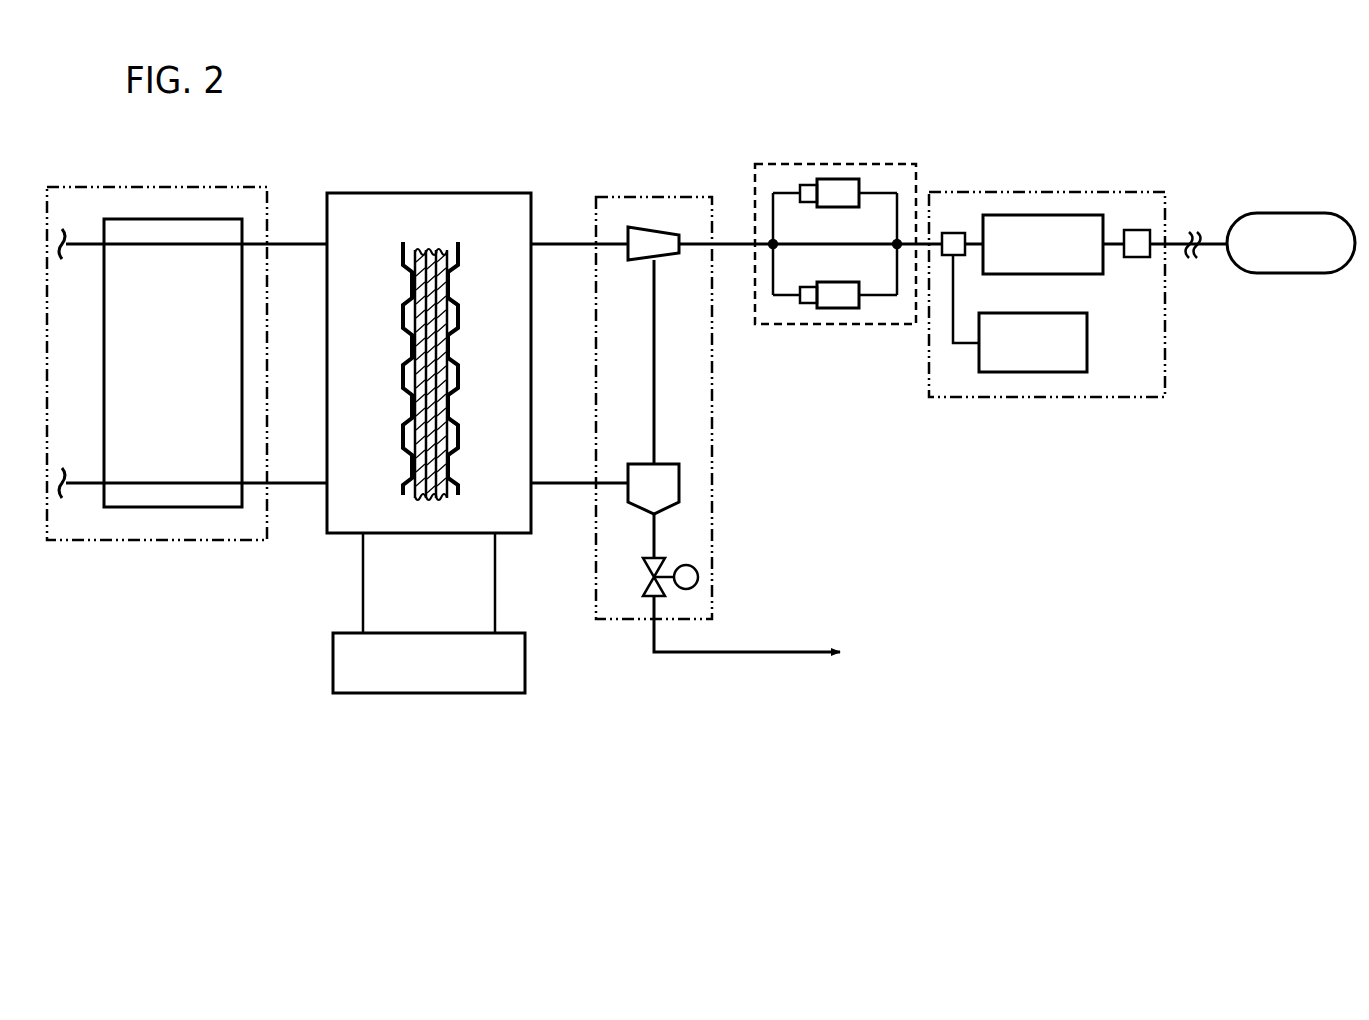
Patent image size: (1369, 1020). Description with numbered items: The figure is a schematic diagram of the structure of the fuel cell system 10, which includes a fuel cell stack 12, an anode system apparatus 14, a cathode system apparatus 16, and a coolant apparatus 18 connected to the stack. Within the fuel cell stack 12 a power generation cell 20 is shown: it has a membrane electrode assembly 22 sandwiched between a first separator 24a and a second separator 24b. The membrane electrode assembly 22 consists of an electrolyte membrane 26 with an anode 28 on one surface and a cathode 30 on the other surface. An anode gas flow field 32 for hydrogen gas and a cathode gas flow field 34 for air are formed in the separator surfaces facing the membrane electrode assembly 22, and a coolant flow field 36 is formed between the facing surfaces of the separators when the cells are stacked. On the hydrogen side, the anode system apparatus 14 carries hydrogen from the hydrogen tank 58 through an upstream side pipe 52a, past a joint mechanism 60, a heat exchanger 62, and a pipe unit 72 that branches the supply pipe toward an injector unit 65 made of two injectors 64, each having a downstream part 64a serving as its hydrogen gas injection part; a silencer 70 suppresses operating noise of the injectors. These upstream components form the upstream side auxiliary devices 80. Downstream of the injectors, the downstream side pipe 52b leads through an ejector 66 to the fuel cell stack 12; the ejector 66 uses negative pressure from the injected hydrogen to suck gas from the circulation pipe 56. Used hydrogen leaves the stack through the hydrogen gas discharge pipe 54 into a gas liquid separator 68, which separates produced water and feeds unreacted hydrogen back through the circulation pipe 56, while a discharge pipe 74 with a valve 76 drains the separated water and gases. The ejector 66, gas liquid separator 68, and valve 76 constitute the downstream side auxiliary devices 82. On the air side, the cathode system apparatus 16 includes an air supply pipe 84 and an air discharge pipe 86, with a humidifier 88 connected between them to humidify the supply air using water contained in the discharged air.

The fuel cell system 10 is at (543, 95).
The fuel cell stack 12 is at (420, 193).
The anode system apparatus 14 is at (1007, 91).
The cathode system apparatus 16 is at (197, 185).
The coolant apparatus 18 is at (333, 657).
The power generation cell 20 is at (429, 430).
The membrane electrode assembly 22 is at (427, 433).
The first separator 24a is at (458, 312).
The second separator 24b is at (403, 312).
The electrolyte membrane 26 is at (431, 500).
The anode 28 is at (455, 414).
The cathode 30 is at (413, 500).
The anode gas flow field 32 is at (458, 375).
The cathode gas flow field 34 is at (403, 375).
The coolant flow field 36 is at (456, 398).
The upstream side pipe 52a is at (1110, 245).
The downstream side pipe 52b is at (736, 243).
The hydrogen gas discharge pipe 54 is at (572, 484).
The circulation pipe 56 is at (653, 343).
The hydrogen tank 58 is at (1255, 213).
The joint mechanism 60 is at (1134, 230).
The heat exchanger 62 is at (1022, 215).
The injector 64 is at (847, 345).
The downstream part 64a is at (808, 190).
The injector unit 65 is at (892, 162).
The ejector 66 is at (655, 227).
The gas liquid separator 68 is at (680, 483).
The silencer 70 is at (1026, 373).
The pipe unit 72 is at (953, 233).
The discharge pipe 74 is at (748, 653).
The valve 76 is at (648, 578).
The upstream side auxiliary devices 80 is at (1072, 185).
The downstream side auxiliary devices 82 is at (722, 557).
The air supply pipe 84 is at (302, 243).
The air discharge pipe 86 is at (303, 484).
The humidifier 88 is at (180, 508).